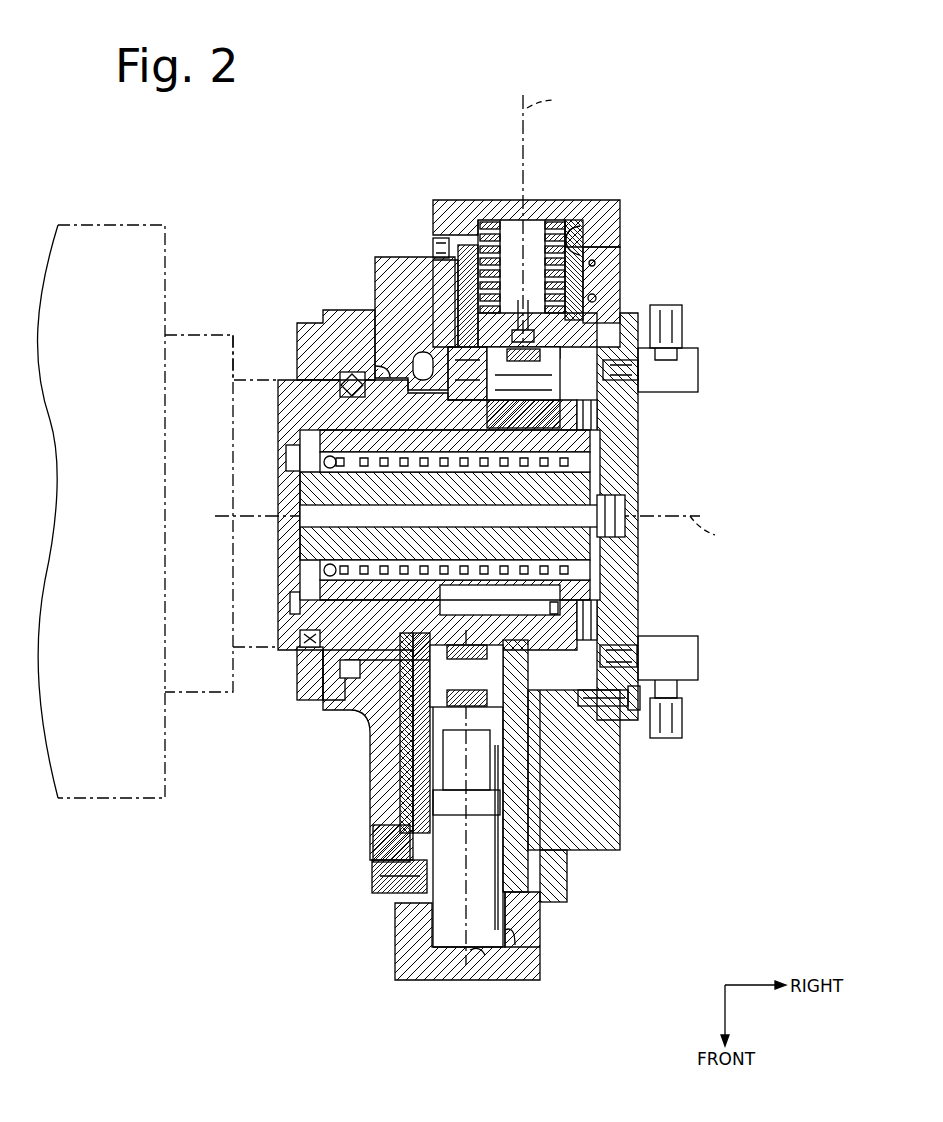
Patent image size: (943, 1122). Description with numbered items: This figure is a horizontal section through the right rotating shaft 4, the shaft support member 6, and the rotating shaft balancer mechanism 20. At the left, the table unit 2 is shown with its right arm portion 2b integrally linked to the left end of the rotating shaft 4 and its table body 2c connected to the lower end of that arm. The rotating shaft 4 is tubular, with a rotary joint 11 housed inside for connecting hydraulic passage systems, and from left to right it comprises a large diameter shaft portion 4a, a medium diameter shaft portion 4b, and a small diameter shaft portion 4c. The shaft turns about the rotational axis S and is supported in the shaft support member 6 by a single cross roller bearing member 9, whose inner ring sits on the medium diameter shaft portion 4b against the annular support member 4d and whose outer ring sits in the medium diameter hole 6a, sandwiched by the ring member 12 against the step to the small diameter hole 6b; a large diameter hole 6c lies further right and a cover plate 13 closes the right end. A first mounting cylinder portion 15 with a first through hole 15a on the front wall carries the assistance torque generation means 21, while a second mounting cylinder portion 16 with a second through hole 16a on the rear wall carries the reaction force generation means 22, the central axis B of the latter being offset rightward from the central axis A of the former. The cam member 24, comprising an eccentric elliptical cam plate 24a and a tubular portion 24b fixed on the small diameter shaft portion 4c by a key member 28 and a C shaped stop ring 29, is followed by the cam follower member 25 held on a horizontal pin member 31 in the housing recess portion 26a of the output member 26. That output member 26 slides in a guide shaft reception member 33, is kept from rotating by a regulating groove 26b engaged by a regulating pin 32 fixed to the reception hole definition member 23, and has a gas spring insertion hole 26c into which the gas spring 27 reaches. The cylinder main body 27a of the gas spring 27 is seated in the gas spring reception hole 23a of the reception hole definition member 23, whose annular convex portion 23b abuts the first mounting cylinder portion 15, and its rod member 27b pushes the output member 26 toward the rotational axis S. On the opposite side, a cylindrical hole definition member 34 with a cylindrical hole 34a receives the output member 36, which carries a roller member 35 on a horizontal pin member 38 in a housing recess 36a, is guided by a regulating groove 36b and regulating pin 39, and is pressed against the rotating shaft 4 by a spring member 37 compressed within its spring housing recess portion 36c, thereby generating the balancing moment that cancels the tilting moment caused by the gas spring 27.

The table unit 2 is at (145, 552).
The right arm portion 2b is at (162, 372).
The table body 2c is at (82, 640).
The right rotating shaft 4 is at (270, 412).
The large diameter shaft portion 4a is at (300, 673).
The medium diameter shaft portion 4b is at (357, 645).
The small diameter shaft portion 4c is at (520, 595).
The annular support member 4d is at (300, 598).
The shaft support member 6 is at (392, 291).
The medium diameter hole 6a is at (343, 363).
The small diameter hole 6b is at (388, 377).
The large diameter hole 6c is at (425, 350).
The bearing member 9 is at (305, 636).
The rotary joint 11 is at (450, 511).
The ring member 12 is at (300, 330).
The cover plate 13 is at (640, 478).
The first mounting cylinder portion 15 is at (605, 770).
The first through hole 15a is at (533, 777).
The second mounting cylinder portion 16 is at (612, 285).
The second through hole 16a is at (597, 297).
The rotating shaft balancer mechanism 20 is at (553, 220).
The assistance torque generation means 21 is at (478, 953).
The reaction force generation means 22 is at (627, 161).
The reception hole definition member 23 is at (542, 965).
The gas spring reception hole 23a is at (520, 935).
The annular convex portion 23b is at (548, 885).
The cam member 24 is at (472, 346).
The cam plate 24a is at (515, 403).
The tubular portion 24b is at (535, 432).
The cam follower member 25 is at (393, 613).
The output member 26 is at (452, 789).
The housing recess portion 26a is at (405, 703).
The regulating groove 26b is at (418, 828).
The gas spring insertion hole 26c is at (432, 760).
The gas spring 27 is at (428, 918).
The cylinder main body 27a is at (455, 955).
The rod member 27b is at (503, 755).
The key member 28 is at (300, 427).
The C shaped stop ring 29 is at (558, 608).
The horizontal pin member 31 is at (640, 645).
The regulating pin 32 is at (388, 878).
The guide shaft reception member 33 is at (545, 722).
The cylindrical hole definition member 34 is at (529, 223).
The cylindrical hole 34a is at (582, 238).
The roller member 35 is at (660, 378).
The output member 36 is at (586, 337).
The housing recess 36a is at (585, 350).
The regulating groove 36b is at (473, 245).
The spring housing recess portion 36c is at (575, 262).
The spring member 37 is at (552, 224).
The horizontal pin member 38 is at (523, 360).
The regulating pin 39 is at (447, 245).
The central axis A is at (472, 952).
The central axis B is at (549, 101).
The rotational axis S is at (714, 533).